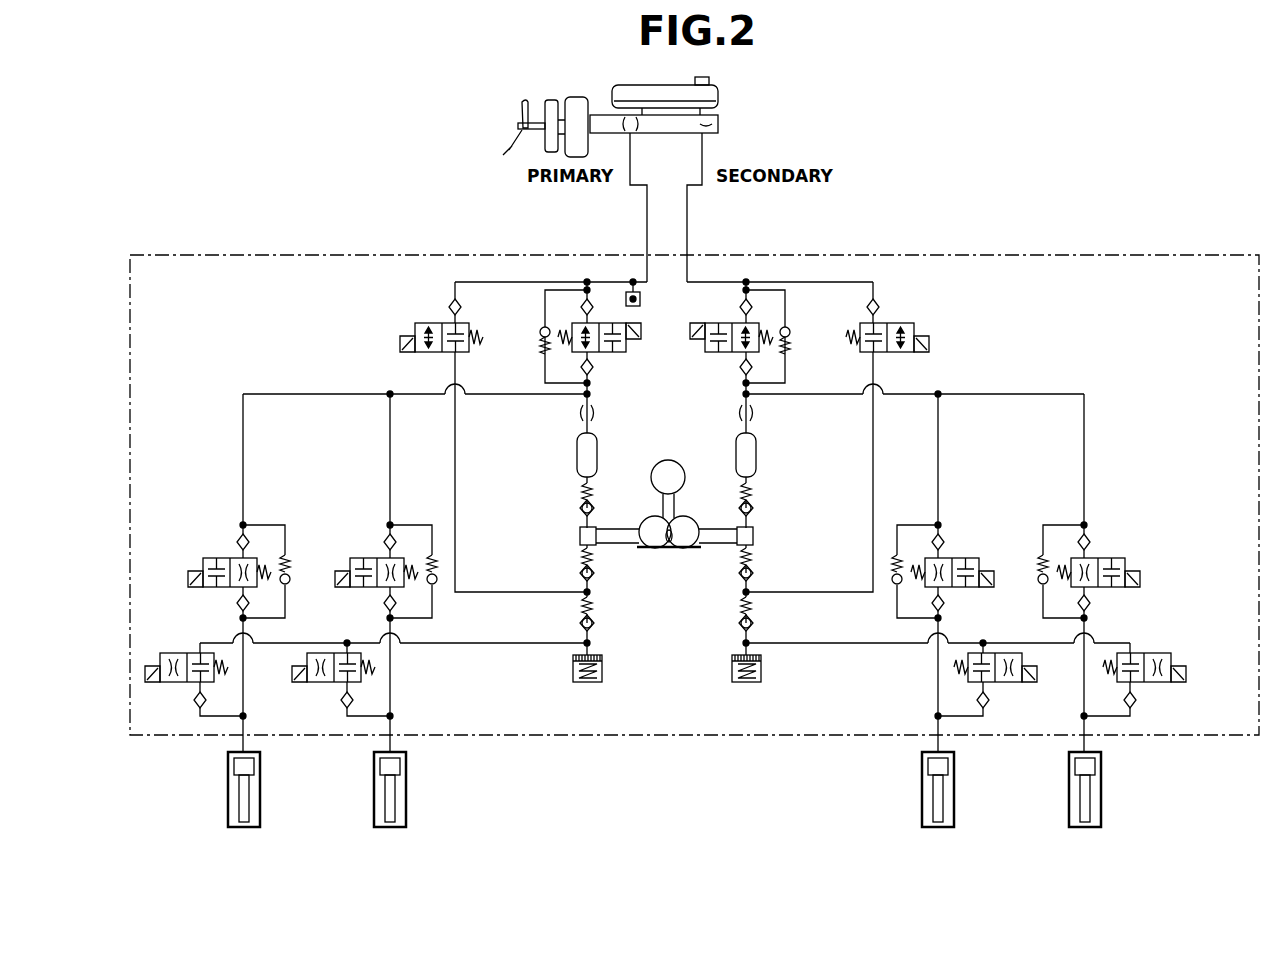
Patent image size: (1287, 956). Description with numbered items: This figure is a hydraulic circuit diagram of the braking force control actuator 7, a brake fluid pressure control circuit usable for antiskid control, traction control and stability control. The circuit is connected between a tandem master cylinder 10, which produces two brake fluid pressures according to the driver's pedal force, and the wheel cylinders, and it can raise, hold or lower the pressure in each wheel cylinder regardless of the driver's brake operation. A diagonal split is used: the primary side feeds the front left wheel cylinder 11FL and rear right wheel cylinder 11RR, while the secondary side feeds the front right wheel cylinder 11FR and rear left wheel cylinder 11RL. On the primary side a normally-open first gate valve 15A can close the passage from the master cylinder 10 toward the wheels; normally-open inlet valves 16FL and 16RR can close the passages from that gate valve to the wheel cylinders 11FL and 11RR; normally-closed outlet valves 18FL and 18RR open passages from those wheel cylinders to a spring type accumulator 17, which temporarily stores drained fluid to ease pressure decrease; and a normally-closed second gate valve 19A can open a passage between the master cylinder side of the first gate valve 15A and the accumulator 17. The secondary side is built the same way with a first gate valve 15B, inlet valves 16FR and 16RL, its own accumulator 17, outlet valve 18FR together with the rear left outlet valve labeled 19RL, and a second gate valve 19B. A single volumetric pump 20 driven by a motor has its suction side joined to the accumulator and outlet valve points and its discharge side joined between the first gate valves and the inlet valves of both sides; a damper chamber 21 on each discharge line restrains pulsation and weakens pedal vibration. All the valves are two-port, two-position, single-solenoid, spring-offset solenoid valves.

The master cylinder 10 is at (718, 125).
The braking force control actuator 7 is at (1068, 255).
The first gate valve 15A is at (598, 323).
The first gate valve 15B is at (712, 323).
The second gate valve 19A is at (415, 323).
The second gate valve 19B is at (908, 323).
The damper chamber 21 is at (577, 455).
The pump 20 is at (665, 548).
The accumulator 17 is at (602, 670).
The inlet valve 16FL is at (205, 558).
The inlet valve 16RR is at (352, 558).
The inlet valve 16RL is at (975, 558).
The inlet valve 16FR is at (1120, 558).
The outlet valve 18FL is at (165, 653).
The outlet valve 18RR is at (335, 683).
The outlet valve 18FR is at (1160, 653).
The rear left pressure decrease valve 19RL is at (995, 683).
The front left wheel cylinder 11FL is at (260, 815).
The rear right wheel cylinder 11RR is at (406, 815).
The rear left wheel cylinder 11RL is at (954, 815).
The front right wheel cylinder 11FR is at (1101, 815).